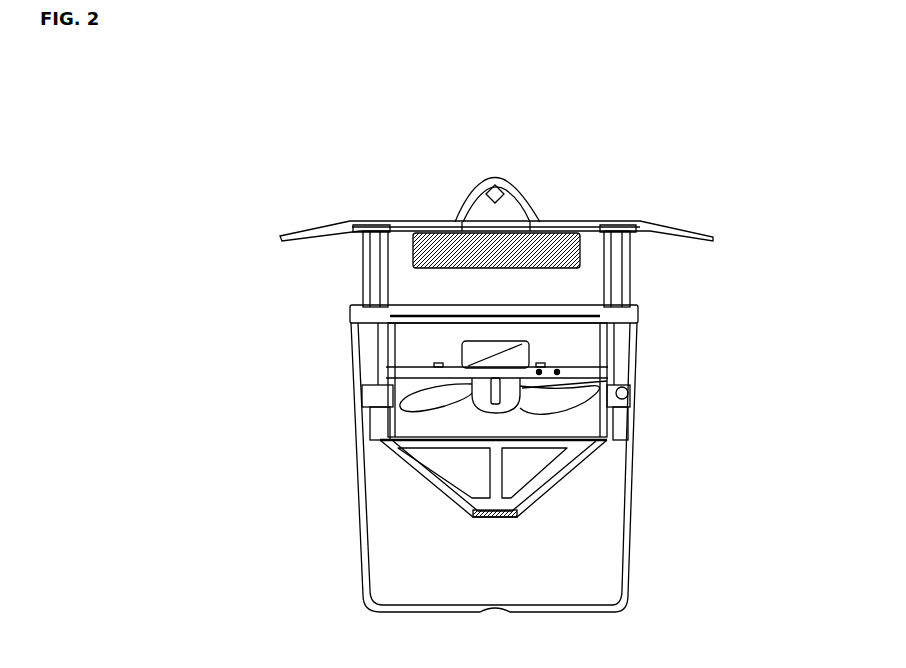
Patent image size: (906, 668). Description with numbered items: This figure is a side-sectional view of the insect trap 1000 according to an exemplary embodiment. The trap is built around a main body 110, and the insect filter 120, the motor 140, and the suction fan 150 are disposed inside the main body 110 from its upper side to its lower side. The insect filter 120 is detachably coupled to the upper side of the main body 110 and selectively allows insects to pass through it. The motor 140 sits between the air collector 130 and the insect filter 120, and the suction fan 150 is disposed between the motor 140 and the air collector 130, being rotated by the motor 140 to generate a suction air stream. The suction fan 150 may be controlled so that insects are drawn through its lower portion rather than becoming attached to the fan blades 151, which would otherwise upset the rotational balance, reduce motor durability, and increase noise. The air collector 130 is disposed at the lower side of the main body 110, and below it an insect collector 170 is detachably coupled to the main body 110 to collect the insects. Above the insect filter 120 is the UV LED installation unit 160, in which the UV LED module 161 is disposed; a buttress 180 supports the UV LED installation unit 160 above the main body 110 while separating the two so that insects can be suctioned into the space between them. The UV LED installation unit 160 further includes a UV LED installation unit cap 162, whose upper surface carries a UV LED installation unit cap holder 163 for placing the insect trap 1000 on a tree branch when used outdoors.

The insect trap 1000 is at (343, 133).
The main body 110 is at (633, 363).
The insect filter 120 is at (379, 328).
The air collector 130 is at (613, 464).
The motor 140 is at (386, 378).
The suction fan 150 is at (402, 412).
The fan blades 151 is at (640, 390).
The UV LED installation unit 160 is at (386, 224).
The UV LED module 161 is at (406, 252).
The UV LED installation unit cap 162 is at (655, 222).
The UV LED installation unit cap holder 163 is at (524, 188).
The insect collector 170 is at (590, 585).
The buttress 180 is at (632, 286).